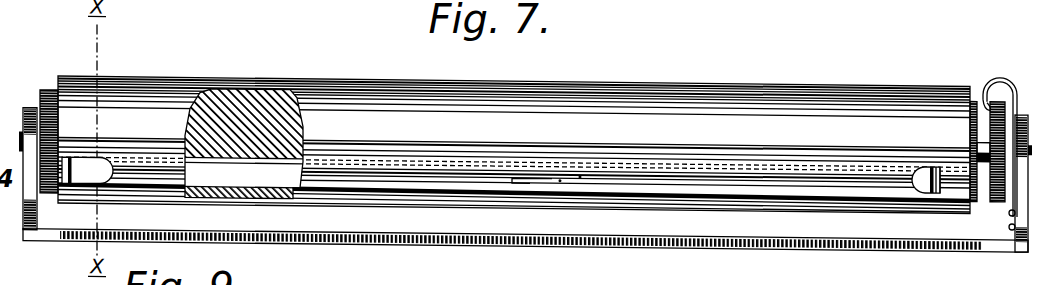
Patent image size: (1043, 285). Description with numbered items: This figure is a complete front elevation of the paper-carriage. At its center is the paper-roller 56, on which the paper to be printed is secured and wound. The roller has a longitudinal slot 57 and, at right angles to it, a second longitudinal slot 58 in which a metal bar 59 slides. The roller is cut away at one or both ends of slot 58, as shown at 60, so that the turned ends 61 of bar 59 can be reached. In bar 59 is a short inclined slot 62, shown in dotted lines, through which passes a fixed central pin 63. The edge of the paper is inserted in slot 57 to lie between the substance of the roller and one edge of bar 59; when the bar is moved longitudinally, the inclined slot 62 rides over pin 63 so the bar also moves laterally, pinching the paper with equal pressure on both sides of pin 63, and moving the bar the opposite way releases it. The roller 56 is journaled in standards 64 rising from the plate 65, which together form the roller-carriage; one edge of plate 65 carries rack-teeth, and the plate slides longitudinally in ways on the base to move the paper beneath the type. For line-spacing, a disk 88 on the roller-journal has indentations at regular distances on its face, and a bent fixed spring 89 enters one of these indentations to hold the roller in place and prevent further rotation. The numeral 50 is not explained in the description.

The slot 50 is at (929, 161).
The paper-roller 56 is at (514, 145).
The longitudinal slot 57 is at (244, 143).
The longitudinal slot 58 is at (613, 187).
The metal bar 59 is at (244, 172).
The cut-away portion 60 is at (953, 183).
The turned ends 61 is at (930, 188).
The inclined slot 62 is at (580, 172).
The fixed pin 63 is at (560, 175).
The standards 64 is at (1012, 220).
The plate 65 is at (385, 243).
The disk 88 is at (993, 190).
The bent fixed spring 89 is at (1000, 67).